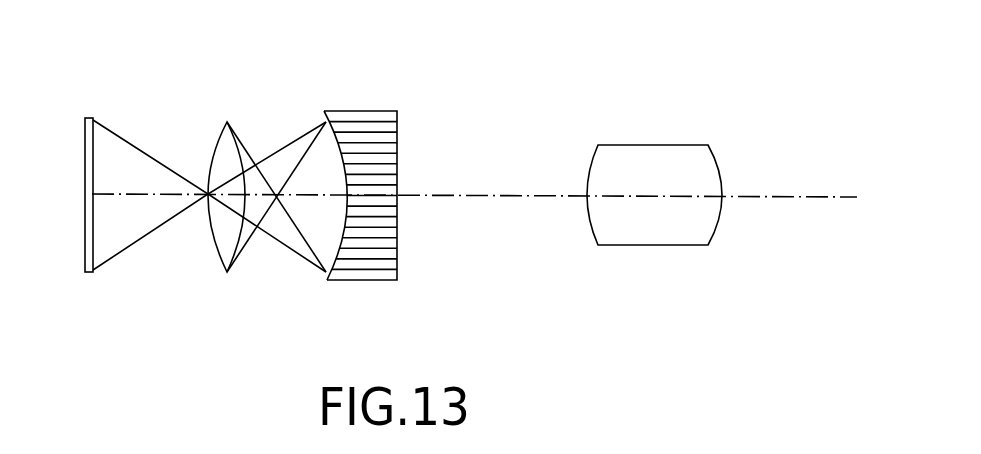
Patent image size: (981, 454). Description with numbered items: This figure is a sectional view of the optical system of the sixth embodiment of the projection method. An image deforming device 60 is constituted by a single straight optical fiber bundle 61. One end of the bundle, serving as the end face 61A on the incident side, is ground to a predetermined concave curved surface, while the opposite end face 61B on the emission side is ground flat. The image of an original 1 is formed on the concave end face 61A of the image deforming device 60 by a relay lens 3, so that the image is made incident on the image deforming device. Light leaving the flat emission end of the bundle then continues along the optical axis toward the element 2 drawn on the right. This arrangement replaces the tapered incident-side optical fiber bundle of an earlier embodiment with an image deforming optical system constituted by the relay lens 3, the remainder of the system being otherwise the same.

The original 1 is at (85, 227).
The observer's eye / eyepiece lens 2 is at (695, 160).
The relay lens 3 is at (222, 132).
The image deforming device 60 is at (366, 194).
The straight optical fiber bundle 61 is at (366, 194).
The end face on the incident side 61A is at (337, 245).
The back surface of mirror 61B is at (398, 250).